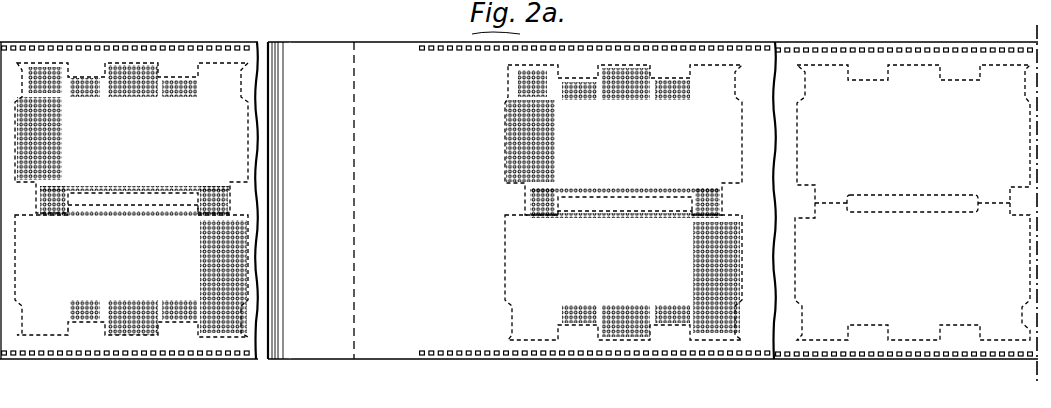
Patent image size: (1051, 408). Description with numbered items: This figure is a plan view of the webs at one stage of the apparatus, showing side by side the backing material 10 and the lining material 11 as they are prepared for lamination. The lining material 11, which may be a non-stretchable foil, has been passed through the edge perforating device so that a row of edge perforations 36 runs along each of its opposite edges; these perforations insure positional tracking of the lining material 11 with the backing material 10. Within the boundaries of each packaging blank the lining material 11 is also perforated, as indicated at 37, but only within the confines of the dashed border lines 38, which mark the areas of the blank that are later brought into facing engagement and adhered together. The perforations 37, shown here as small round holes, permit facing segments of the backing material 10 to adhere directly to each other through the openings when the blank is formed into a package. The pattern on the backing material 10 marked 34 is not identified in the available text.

The backing material 10 is at (30, 28).
The lining material 11 is at (376, 43).
The coated pattern area 34 is at (50, 63).
The edge perforations 36 is at (432, 46).
The perforations 37 is at (518, 90).
The border lines 38 is at (555, 140).